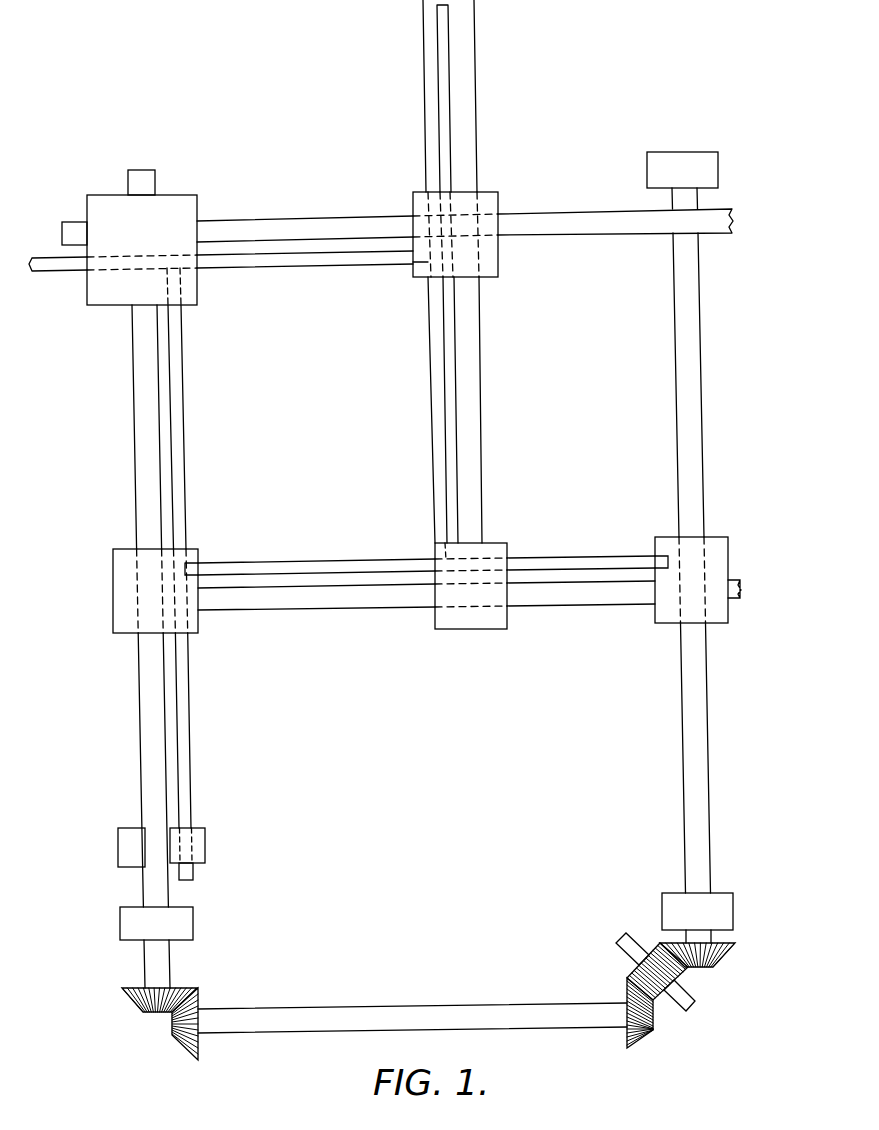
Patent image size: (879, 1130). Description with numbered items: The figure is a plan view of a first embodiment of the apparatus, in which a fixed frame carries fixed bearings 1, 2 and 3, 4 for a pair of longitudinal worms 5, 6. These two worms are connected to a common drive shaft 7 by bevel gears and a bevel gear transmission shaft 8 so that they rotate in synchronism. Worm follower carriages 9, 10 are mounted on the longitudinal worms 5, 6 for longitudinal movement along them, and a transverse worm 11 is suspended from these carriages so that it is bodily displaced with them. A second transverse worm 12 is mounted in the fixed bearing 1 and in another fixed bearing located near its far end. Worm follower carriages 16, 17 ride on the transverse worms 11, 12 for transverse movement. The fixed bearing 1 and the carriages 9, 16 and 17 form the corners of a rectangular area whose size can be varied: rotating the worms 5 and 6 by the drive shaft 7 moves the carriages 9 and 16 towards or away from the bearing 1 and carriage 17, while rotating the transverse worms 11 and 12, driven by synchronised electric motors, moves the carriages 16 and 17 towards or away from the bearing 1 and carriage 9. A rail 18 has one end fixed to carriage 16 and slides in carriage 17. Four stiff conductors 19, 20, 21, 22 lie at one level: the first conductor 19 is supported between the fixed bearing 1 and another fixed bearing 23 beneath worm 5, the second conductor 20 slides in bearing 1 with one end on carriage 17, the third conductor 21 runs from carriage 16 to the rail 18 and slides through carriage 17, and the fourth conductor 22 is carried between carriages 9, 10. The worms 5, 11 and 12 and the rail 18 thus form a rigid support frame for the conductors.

The fixed bearing 1 is at (166, 203).
The fixed bearing 2 is at (685, 167).
The fixed bearing 3 is at (670, 912).
The fixed bearing 4 is at (173, 922).
The longitudinal worm 5 is at (162, 962).
The longitudinal worm 6 is at (697, 800).
The common drive shaft 7 is at (615, 933).
The bevel gear transmission shaft 8 is at (395, 1013).
The worm follower carriage 9 is at (192, 622).
The worm follower carriage 10 is at (665, 603).
The transverse worm 11 is at (335, 600).
The second transverse worm 12 is at (247, 228).
The worm follower carriage 16 is at (490, 617).
The worm follower carriage 17 is at (477, 200).
The rail 18 is at (468, 335).
The first conductor 19 is at (181, 405).
The second conductor 20 is at (307, 262).
The third conductor 21 is at (437, 392).
The fourth conductor 22 is at (287, 567).
The fixed bearing 23 is at (200, 843).